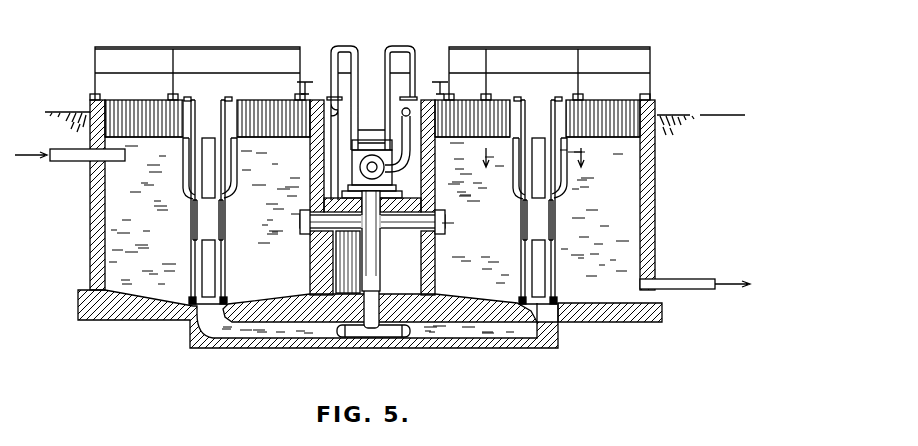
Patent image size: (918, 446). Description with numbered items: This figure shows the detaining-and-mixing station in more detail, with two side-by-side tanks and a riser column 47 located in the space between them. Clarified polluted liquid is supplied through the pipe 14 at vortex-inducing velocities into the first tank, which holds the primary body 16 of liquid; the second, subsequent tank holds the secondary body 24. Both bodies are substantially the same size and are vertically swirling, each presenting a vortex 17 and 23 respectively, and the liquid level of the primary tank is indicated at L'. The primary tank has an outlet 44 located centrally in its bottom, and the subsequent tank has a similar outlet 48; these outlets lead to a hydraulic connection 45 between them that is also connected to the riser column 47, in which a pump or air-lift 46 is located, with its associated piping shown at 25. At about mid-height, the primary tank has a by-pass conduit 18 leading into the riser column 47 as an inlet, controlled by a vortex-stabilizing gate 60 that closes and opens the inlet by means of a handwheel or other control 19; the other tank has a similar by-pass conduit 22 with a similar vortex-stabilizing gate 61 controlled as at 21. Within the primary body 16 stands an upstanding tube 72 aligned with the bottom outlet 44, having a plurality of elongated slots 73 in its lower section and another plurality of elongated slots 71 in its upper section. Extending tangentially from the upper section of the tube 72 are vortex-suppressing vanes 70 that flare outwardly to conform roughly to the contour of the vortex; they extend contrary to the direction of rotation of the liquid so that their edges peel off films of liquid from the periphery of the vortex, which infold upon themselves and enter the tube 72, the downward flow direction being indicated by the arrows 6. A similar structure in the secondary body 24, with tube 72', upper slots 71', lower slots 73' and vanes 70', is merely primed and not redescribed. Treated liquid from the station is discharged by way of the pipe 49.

The flow direction arrows 6 is at (532, 159).
The pipe 14 is at (70, 162).
The primary body 16 is at (156, 256).
The vortex 17 is at (210, 158).
The by-pass conduit 18 is at (331, 240).
The handwheel or other control 19 is at (305, 94).
The control 21 is at (441, 80).
The by-pass conduit 22 is at (408, 228).
The vortex 23 is at (512, 159).
The secondary body 24 is at (603, 260).
The suction pipe 25 is at (413, 110).
The outlet 44 is at (200, 343).
The hydraulic connection 45 is at (352, 338).
The pump or air-lift 46 is at (372, 157).
The riser column 47 is at (373, 298).
The outlet 48 is at (540, 318).
The pipe 49 is at (673, 282).
The vortex-stabilizing gate 60 is at (305, 212).
The vortex-stabilizing gate 61 is at (440, 214).
The vortex-suppressing vanes 70 is at (226, 168).
The elongated slots 71 is at (234, 175).
The tube 72 is at (230, 221).
The elongated slots 73 is at (228, 272).
The vortex-suppressing vanes 70' is at (512, 168).
The elongated slots 71' is at (511, 174).
The tube 72' is at (517, 220).
The elongated slots 73' is at (514, 268).
The liquid-level L' is at (87, 95).